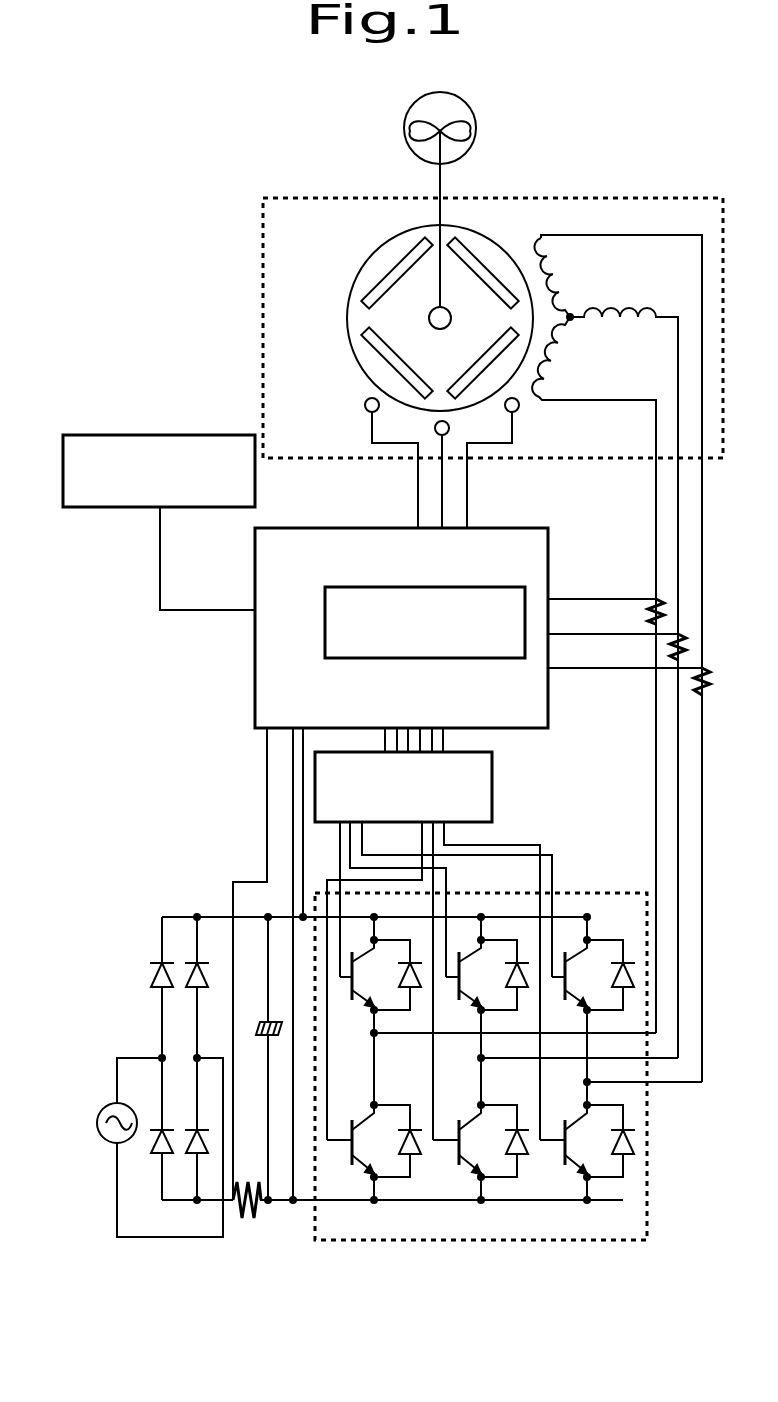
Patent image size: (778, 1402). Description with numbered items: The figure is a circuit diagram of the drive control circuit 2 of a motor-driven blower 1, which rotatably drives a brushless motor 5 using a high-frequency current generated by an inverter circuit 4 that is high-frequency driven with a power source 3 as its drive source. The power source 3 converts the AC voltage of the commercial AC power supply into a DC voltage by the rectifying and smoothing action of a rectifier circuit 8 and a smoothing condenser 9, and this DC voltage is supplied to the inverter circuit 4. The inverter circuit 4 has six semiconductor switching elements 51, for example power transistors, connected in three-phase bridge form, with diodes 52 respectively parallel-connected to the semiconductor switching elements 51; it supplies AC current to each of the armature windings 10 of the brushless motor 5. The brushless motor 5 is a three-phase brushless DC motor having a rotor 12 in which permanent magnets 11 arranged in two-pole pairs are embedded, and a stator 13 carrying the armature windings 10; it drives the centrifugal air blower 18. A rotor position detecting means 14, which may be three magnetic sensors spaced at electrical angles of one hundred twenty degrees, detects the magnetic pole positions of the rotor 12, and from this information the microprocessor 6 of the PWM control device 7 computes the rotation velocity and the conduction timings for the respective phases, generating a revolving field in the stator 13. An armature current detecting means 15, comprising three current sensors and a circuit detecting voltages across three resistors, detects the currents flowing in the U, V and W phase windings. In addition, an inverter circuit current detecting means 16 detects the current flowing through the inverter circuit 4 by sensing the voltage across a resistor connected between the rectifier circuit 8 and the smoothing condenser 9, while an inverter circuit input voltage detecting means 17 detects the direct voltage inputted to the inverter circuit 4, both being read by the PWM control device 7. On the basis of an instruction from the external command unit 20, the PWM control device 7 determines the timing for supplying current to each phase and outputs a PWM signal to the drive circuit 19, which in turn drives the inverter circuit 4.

The motor-driven blower 1 is at (216, 178).
The drive control circuit 2 is at (632, 1246).
The power source 3 is at (141, 1240).
The inverter circuit 4 is at (352, 1242).
The brushless motor 5 is at (287, 198).
The microprocessor 6 is at (508, 660).
The PWM control device 7 is at (510, 528).
The rectifier circuit 8 is at (180, 1058).
The smoothing condenser 9 is at (275, 1040).
The armature windings 10 is at (575, 290).
The permanent magnets 11 is at (368, 362).
The rotor 12 is at (357, 268).
The stator 13 is at (560, 222).
The rotor position detecting means 14 is at (418, 420).
The armature current detecting means 15 is at (683, 625).
The inverter circuit current detecting means 16 is at (240, 1245).
The inverter circuit input voltage detecting means 17 is at (288, 735).
The centrifugal air blower 18 is at (476, 118).
The drive circuit 19 is at (495, 790).
The external command unit 20 is at (132, 435).
The semiconductor switching elements 51 is at (352, 1000).
The diodes 52 is at (517, 962).